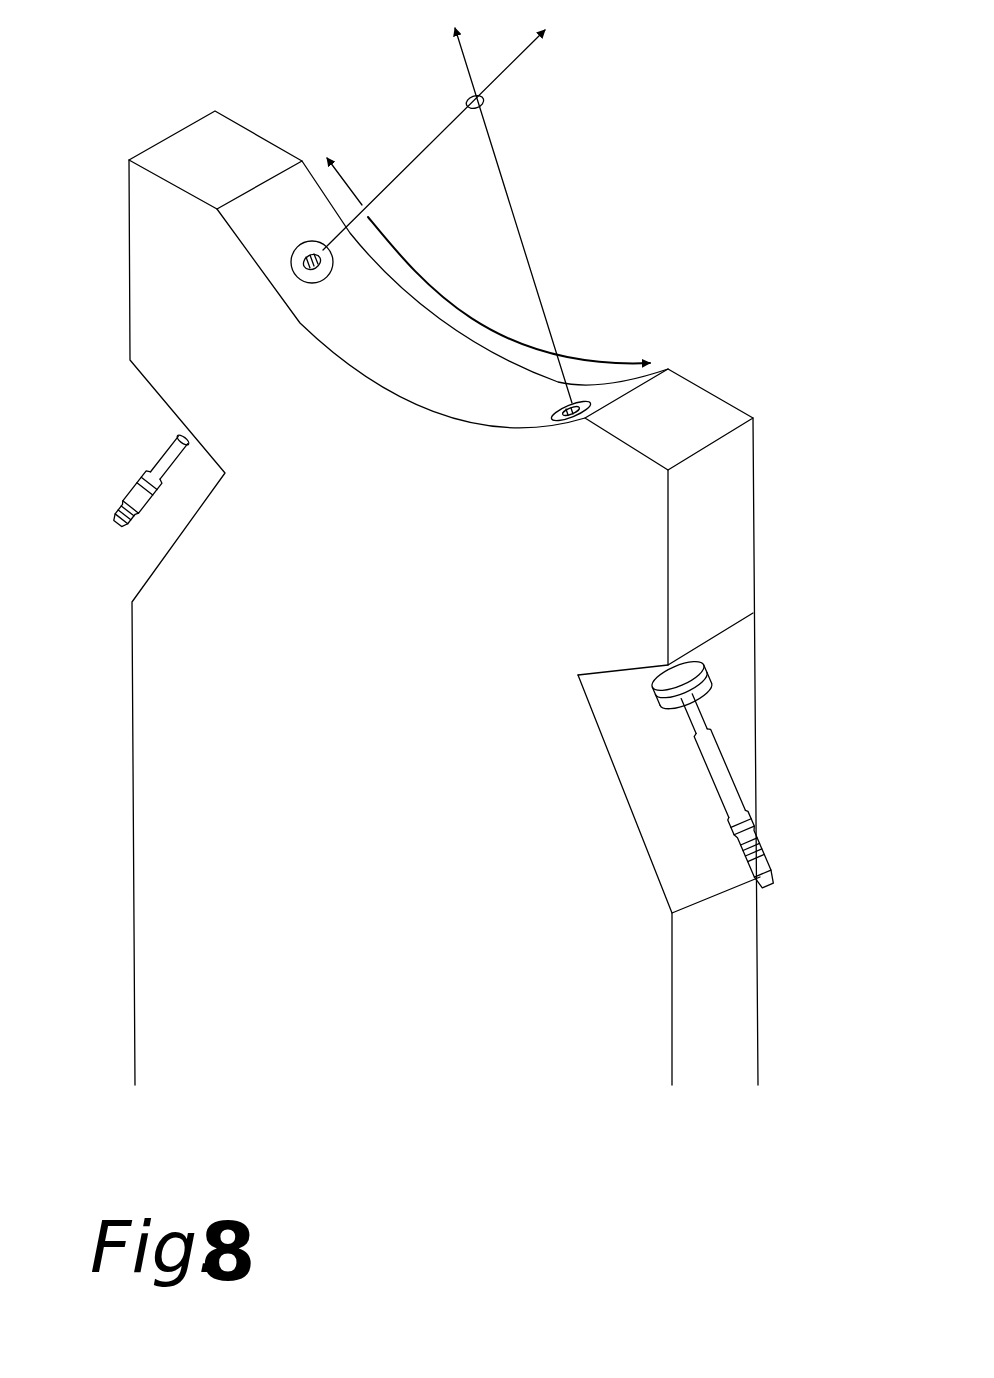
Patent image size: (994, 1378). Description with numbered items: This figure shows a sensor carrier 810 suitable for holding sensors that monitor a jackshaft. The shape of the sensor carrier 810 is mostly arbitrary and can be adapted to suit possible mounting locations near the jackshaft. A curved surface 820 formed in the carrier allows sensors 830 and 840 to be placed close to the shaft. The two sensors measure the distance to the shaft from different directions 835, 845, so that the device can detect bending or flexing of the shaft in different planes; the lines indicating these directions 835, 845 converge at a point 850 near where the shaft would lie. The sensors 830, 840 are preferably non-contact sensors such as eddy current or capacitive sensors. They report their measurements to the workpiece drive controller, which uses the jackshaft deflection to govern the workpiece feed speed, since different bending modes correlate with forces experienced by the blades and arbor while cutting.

The sensor carrier 810 is at (733, 1167).
The curved surface 820 is at (617, 362).
The sensor 830 is at (165, 433).
The direction 835 is at (403, 172).
The sensor 840 is at (722, 673).
The direction 845 is at (513, 205).
The axis intersection point 850 is at (485, 105).